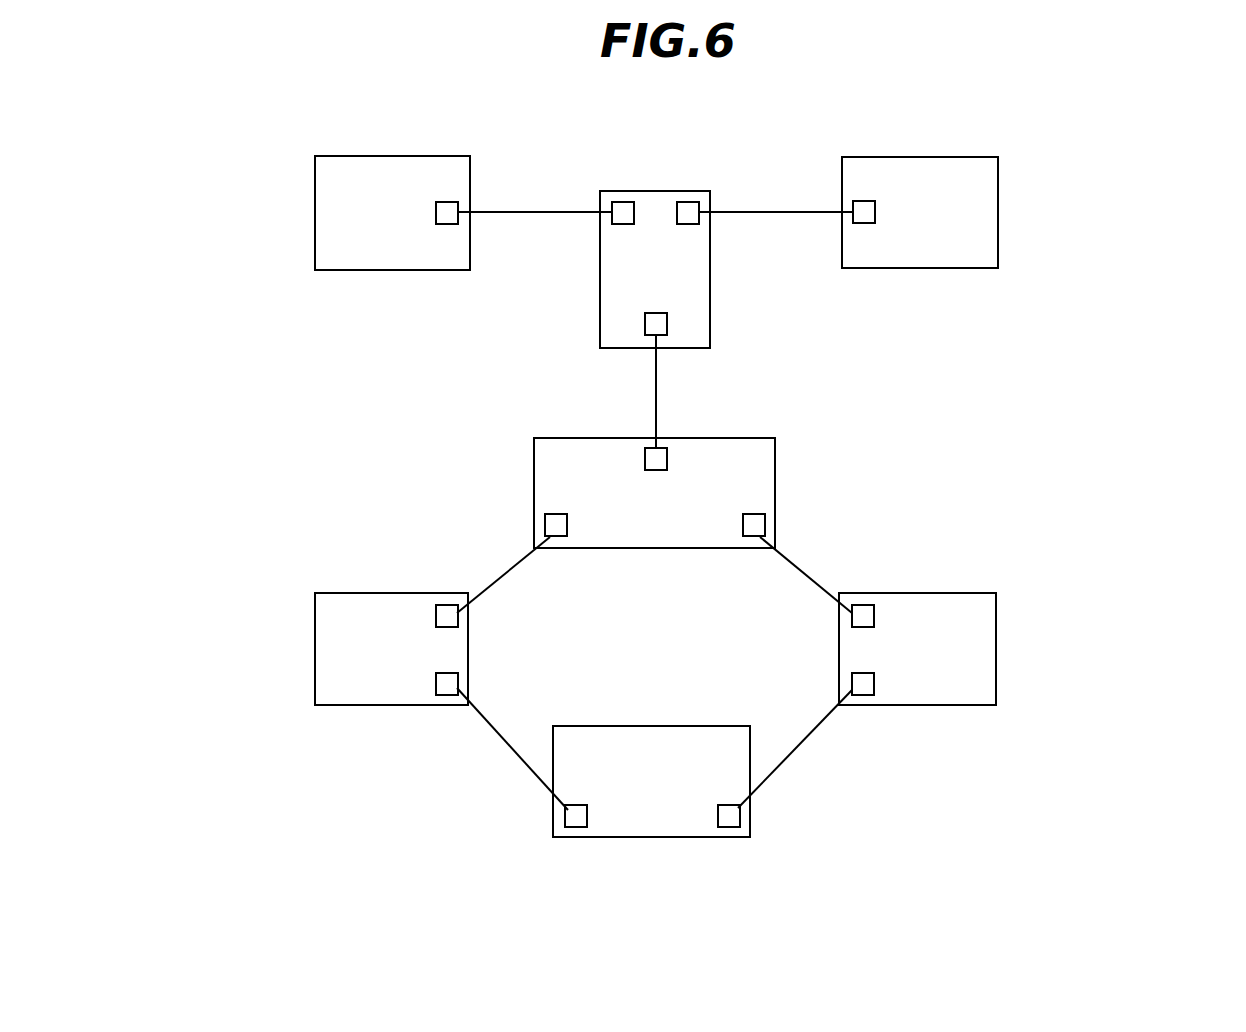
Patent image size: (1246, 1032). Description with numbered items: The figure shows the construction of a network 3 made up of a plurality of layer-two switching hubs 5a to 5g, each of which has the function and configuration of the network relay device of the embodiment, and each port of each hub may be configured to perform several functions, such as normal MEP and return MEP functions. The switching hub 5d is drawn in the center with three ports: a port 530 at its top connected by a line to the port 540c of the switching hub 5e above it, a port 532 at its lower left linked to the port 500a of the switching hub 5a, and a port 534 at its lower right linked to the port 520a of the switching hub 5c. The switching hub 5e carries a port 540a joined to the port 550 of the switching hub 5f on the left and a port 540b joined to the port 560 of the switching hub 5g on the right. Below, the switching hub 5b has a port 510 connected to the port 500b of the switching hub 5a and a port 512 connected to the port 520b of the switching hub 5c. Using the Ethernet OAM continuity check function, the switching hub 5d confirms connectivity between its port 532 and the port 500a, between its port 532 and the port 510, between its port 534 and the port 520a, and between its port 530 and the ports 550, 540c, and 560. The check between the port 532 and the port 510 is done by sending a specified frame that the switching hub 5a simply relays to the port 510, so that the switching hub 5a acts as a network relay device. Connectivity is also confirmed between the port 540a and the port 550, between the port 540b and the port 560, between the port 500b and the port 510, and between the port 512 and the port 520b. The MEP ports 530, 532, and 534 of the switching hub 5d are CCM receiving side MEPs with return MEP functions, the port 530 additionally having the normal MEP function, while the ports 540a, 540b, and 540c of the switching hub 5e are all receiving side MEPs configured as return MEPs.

The network 3 is at (1068, 158).
The switching hub 5a is at (315, 648).
The switching hub 5b is at (651, 837).
The switching hub 5c is at (996, 648).
The switching hub 5d is at (775, 466).
The switching hub 5e is at (656, 191).
The switching hub 5f is at (386, 156).
The switching hub 5g is at (998, 218).
The port 500a is at (446, 605).
The port 500b is at (442, 695).
The port 510 is at (565, 818).
The port 512 is at (740, 820).
The port 520a is at (874, 614).
The port 520b is at (874, 688).
The port 530 is at (667, 458).
The port 532 is at (545, 525).
The port 534 is at (765, 524).
The port 540a is at (622, 202).
The port 540b is at (689, 202).
The port 540c is at (667, 325).
The port 550 is at (452, 202).
The port 560 is at (862, 201).